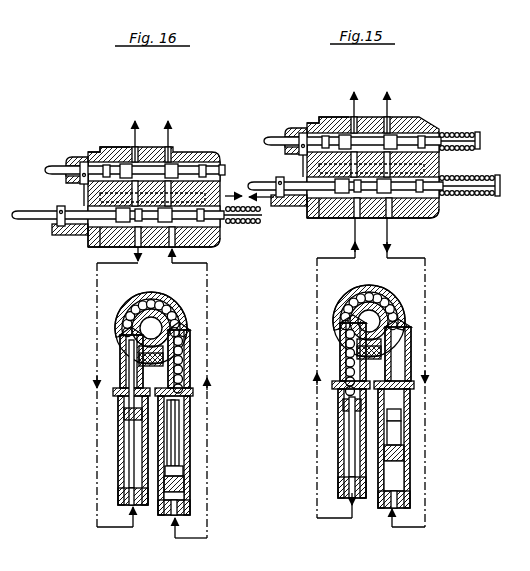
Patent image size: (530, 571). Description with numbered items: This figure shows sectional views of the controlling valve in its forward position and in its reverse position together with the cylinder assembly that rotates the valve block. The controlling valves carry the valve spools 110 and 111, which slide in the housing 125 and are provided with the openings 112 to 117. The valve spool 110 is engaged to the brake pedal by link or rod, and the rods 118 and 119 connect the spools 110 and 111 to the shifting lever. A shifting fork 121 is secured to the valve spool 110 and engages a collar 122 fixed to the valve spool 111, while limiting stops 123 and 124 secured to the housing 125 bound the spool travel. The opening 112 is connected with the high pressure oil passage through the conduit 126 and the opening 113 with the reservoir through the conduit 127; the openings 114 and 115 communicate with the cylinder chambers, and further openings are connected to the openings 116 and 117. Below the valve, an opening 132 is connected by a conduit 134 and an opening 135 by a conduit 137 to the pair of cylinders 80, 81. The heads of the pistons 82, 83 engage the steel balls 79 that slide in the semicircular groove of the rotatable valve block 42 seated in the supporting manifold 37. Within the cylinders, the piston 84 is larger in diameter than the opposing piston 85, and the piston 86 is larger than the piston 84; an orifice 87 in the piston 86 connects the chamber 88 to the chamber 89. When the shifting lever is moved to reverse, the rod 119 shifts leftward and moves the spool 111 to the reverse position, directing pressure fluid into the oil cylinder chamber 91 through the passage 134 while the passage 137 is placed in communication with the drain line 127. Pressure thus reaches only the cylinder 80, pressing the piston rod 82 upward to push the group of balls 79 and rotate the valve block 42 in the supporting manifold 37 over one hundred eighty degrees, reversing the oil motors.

In FIG. 16, the valve spool 110 is at (206, 150).
In FIG. 15, the valve spool 110 is at (376, 153).
In FIG. 16, the valve spool 111 is at (218, 236).
In FIG. 15, the valve spool 111 is at (385, 219).
In FIG. 16, the opening 112 is at (86, 196).
In FIG. 15, the opening 112 is at (287, 167).
In FIG. 16, the opening 113 is at (134, 183).
In FIG. 15, the opening 113 is at (228, 192).
In FIG. 16, the opening 114 is at (184, 138).
In FIG. 15, the opening 114 is at (371, 109).
In FIG. 16, the opening 115 is at (149, 138).
In FIG. 15, the opening 115 is at (340, 109).
In FIG. 16, the opening 116 is at (189, 255).
In FIG. 15, the opening 116 is at (406, 237).
In FIG. 16, the opening 117 is at (130, 259).
In FIG. 15, the opening 117 is at (349, 237).
In FIG. 16, the rod 118 is at (50, 168).
In FIG. 15, the rod 118 is at (337, 135).
In FIG. 16, the rod 119 is at (24, 211).
In FIG. 15, the rod 119 is at (345, 186).
In FIG. 16, the shifting fork 121 is at (80, 236).
In FIG. 15, the shifting fork 121 is at (323, 219).
In FIG. 16, the collar 122 is at (62, 230).
In FIG. 15, the collar 122 is at (295, 210).
In FIG. 16, the limiting stop 123 is at (72, 158).
In FIG. 15, the limiting stop 123 is at (284, 129).
In FIG. 16, the limiting stop 124 is at (55, 231).
In FIG. 15, the limiting stop 124 is at (281, 223).
In FIG. 16, the housing 125 is at (102, 150).
In FIG. 15, the housing 125 is at (320, 109).
In FIG. 16, the conduit 126 is at (72, 190).
In FIG. 15, the conduit 126 is at (273, 149).
In FIG. 16, the conduit 127 is at (222, 186).
In FIG. 15, the conduit 127 is at (375, 164).
In FIG. 16, the supporting manifold 37 is at (132, 300).
In FIG. 15, the supporting manifold 37 is at (369, 309).
In FIG. 16, the rotatable valve block 42 is at (181, 318).
In FIG. 15, the rotatable valve block 42 is at (359, 337).
In FIG. 16, the steel balls 79 is at (120, 333).
In FIG. 15, the steel balls 79 is at (376, 352).
In FIG. 16, the cylinder 80 is at (120, 493).
In FIG. 15, the cylinder 80 is at (327, 487).
In FIG. 16, the cylinder 81 is at (190, 508).
In FIG. 15, the cylinder 81 is at (418, 505).
In FIG. 16, the piston 82 is at (121, 362).
In FIG. 15, the piston 82 is at (327, 410).
In FIG. 16, the piston 83 is at (190, 415).
In FIG. 15, the piston 83 is at (417, 417).
In FIG. 16, the piston 84 is at (126, 412).
In FIG. 16, the piston 85 is at (183, 470).
In FIG. 15, the piston 85 is at (423, 408).
In FIG. 16, the piston 86 is at (184, 484).
In FIG. 15, the piston 86 is at (423, 433).
In FIG. 16, the orifice 87 is at (184, 495).
In FIG. 15, the orifice 87 is at (420, 459).
In FIG. 15, the chamber 88 is at (421, 478).
In FIG. 16, the chamber 89 is at (179, 440).
In FIG. 16, the oil cylinder chamber 91 is at (131, 445).
In FIG. 15, the oil cylinder chamber 91 is at (322, 437).
In FIG. 16, the opening 132 is at (109, 538).
In FIG. 15, the opening 132 is at (332, 531).
In FIG. 16, the conduit 134 is at (97, 500).
In FIG. 15, the conduit 134 is at (298, 388).
In FIG. 16, the opening 135 is at (134, 512).
In FIG. 15, the opening 135 is at (365, 517).
In FIG. 16, the conduit 137 is at (207, 538).
In FIG. 15, the conduit 137 is at (432, 398).